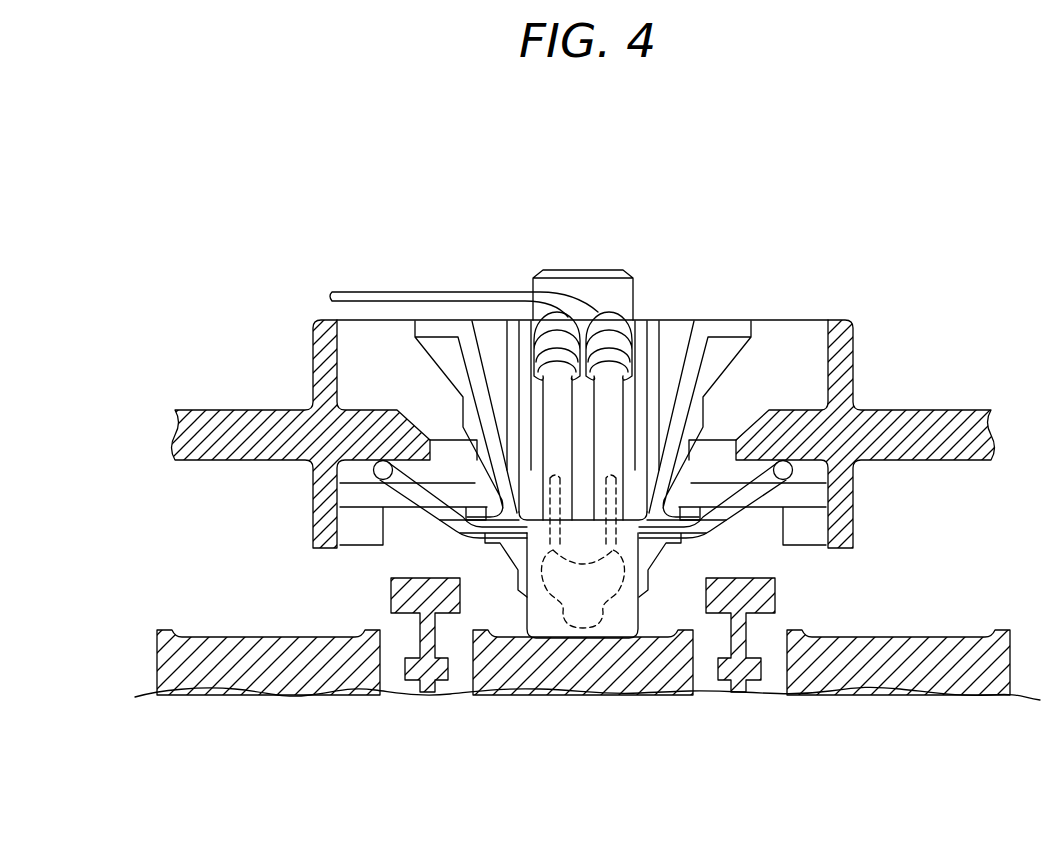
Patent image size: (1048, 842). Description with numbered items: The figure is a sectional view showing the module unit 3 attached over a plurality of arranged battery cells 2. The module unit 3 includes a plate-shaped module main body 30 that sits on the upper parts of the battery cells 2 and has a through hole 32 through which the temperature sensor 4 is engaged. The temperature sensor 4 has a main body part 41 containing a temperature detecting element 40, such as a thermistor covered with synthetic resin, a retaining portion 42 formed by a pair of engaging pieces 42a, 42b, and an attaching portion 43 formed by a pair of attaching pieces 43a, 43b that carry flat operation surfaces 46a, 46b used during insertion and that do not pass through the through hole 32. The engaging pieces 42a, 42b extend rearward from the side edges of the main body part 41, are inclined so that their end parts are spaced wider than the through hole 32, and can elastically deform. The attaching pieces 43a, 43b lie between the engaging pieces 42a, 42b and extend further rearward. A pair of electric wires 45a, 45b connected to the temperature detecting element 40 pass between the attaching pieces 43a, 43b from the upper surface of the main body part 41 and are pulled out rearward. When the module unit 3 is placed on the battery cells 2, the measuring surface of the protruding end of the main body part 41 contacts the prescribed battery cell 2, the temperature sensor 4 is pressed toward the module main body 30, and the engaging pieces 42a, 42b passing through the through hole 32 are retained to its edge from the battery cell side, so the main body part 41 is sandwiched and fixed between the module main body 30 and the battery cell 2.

The battery cell 2 is at (260, 677).
The module unit 3 is at (595, 386).
The temperature sensor 4 is at (600, 280).
The module main body 30 is at (930, 423).
The through hole 32 is at (788, 327).
The temperature detecting element 40 is at (613, 622).
The main body part 41 is at (547, 622).
The retaining portion 42 is at (586, 539).
The engaging piece 42a is at (737, 503).
The engaging piece 42b is at (440, 510).
The attaching portion 43 is at (404, 320).
The attaching piece 43a is at (720, 330).
The attaching piece 43b is at (463, 318).
The electric wire 45a is at (590, 308).
The electric wire 45b is at (557, 328).
The flat surface 46a is at (735, 320).
The flat surface 46b is at (437, 318).